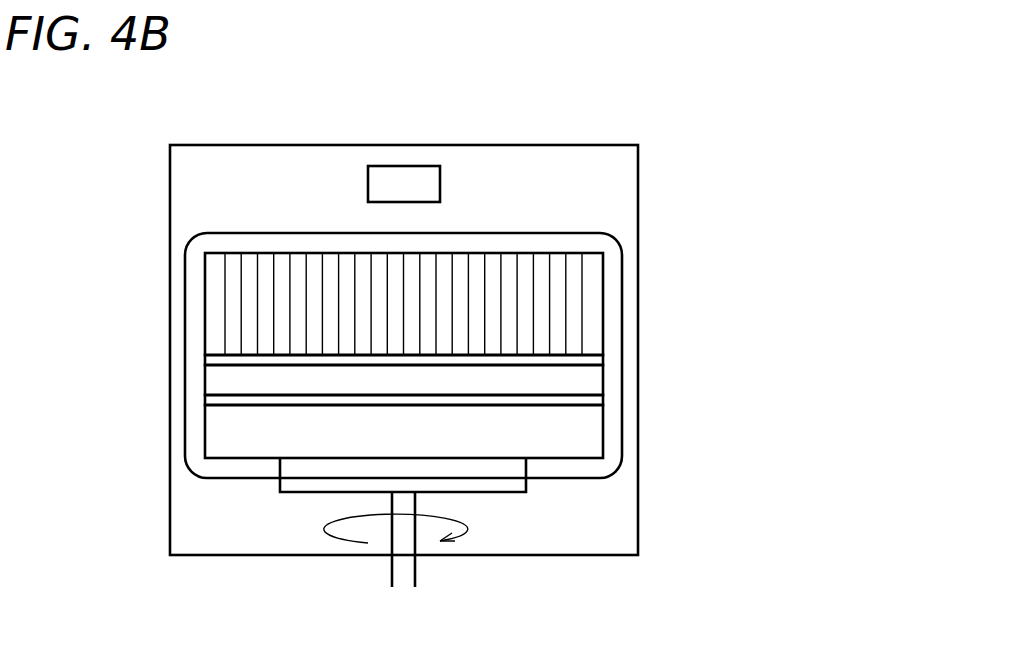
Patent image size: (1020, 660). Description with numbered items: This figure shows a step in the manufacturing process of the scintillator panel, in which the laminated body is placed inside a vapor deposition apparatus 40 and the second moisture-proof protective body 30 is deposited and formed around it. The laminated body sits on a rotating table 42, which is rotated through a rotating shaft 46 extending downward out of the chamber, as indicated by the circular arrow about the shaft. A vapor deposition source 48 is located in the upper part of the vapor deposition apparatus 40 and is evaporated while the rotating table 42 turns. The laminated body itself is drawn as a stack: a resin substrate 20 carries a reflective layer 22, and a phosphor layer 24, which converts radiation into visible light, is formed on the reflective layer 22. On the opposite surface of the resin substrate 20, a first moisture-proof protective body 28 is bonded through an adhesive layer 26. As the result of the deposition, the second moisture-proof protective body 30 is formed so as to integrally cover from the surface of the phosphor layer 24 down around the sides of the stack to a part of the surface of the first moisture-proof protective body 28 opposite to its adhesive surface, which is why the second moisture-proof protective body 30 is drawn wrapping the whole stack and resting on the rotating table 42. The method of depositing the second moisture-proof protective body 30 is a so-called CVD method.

The vapor deposition apparatus 40 is at (638, 200).
The vapor deposition source 48 is at (410, 177).
The second moisture-proof protective body 30 is at (620, 265).
The phosphor layer 24 is at (570, 310).
The reflective layer 22 is at (590, 361).
The resin substrate 20 is at (585, 383).
The adhesive layer 26 is at (592, 401).
The first moisture-proof protective body 28 is at (590, 437).
The rotating table 42 is at (507, 480).
The rotating shaft 46 is at (390, 572).